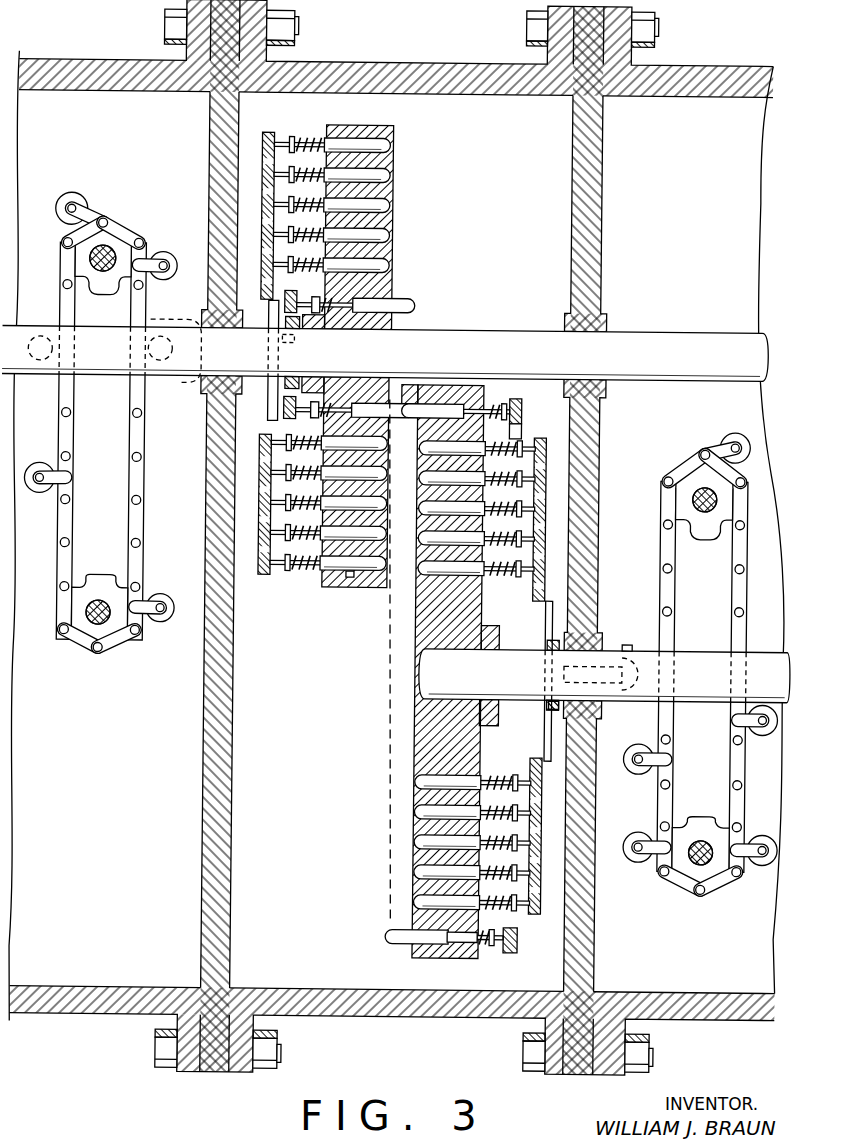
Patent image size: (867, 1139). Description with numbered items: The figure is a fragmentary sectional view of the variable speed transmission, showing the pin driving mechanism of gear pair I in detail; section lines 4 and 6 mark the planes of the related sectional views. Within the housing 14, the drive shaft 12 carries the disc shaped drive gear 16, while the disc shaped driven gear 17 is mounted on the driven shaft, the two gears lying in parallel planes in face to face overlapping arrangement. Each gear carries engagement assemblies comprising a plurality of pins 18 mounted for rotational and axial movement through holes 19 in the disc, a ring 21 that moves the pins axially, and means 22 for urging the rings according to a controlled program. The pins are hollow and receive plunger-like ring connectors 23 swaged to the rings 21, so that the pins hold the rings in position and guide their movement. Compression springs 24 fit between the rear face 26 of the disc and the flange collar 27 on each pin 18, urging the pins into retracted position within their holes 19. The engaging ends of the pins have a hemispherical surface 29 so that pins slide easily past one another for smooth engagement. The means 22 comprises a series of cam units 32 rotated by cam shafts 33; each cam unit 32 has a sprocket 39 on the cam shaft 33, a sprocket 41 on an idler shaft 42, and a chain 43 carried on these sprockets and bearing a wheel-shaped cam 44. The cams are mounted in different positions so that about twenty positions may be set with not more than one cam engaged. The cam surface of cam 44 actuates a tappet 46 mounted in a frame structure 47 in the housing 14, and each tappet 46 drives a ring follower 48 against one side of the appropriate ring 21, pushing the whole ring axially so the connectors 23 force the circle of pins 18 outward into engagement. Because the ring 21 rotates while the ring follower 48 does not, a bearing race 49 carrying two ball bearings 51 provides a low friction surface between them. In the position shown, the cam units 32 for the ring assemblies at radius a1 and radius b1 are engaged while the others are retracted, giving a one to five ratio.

The section line 4- 4 is at (502, 45).
The section line 6- 6 is at (256, 407).
The drive shaft 12 is at (490, 340).
The housing 14 is at (302, 990).
The drive gear 16 is at (396, 131).
The driven gear 17 is at (384, 877).
The pins 18 is at (338, 582).
The holes 19 is at (353, 579).
The ring 21 is at (264, 580).
The means for urging the rings 22 is at (405, 555).
The ring connectors 23 is at (278, 578).
The compression springs 24 is at (305, 572).
The rear face 26 is at (319, 127).
The flange collar 27 is at (298, 140).
The hemispherical surface 29 is at (405, 299).
The cam units 32 is at (790, 500).
The cam shaft 33 is at (112, 250).
The sprocket 39 is at (80, 270).
The sprocket 41 is at (122, 603).
The idler shaft 42 is at (92, 632).
The chain 43 is at (146, 510).
The cam 44 is at (187, 330).
The tappet 46 is at (186, 382).
The frame structure 47 is at (597, 563).
The ring follower 48 is at (268, 320).
The bearing race 49 is at (288, 345).
The ball bearings 51 is at (288, 370).
The gear pair I is at (470, 256).
The radius a1 is at (413, 311).
The radius b1 is at (389, 941).